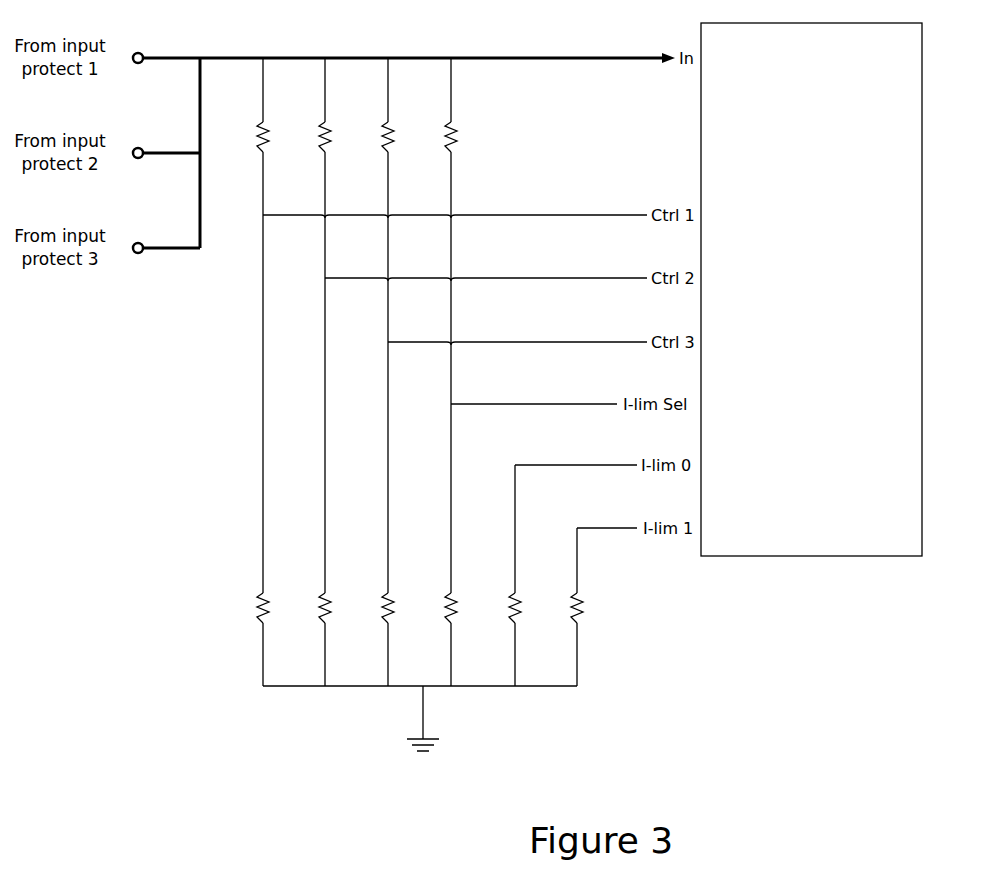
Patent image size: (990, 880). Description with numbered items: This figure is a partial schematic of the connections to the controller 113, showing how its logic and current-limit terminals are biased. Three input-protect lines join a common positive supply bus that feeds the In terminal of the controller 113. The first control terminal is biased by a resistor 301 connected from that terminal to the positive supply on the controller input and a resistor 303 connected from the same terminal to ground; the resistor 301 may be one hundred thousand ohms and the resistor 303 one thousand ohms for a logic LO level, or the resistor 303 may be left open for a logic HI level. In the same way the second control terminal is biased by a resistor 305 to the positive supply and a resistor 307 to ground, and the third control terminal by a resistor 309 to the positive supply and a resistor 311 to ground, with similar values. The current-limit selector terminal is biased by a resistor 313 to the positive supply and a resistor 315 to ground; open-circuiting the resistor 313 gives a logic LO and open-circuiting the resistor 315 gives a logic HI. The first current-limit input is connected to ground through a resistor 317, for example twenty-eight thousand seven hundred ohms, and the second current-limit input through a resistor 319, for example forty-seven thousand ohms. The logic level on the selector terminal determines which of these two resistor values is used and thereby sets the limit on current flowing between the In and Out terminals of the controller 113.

The controller 113 is at (922, 135).
The resistor 301 is at (292, 118).
The resistor 303 is at (268, 603).
The resistor 305 is at (354, 118).
The resistor 307 is at (330, 603).
The resistor 309 is at (417, 118).
The resistor 311 is at (393, 603).
The resistor 313 is at (456, 132).
The resistor 315 is at (456, 603).
The resistor 317 is at (520, 603).
The resistor 319 is at (582, 603).